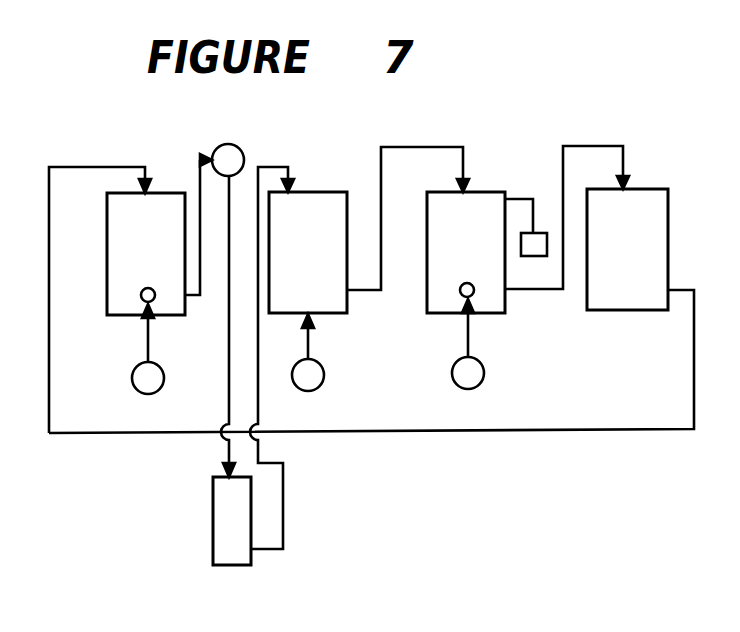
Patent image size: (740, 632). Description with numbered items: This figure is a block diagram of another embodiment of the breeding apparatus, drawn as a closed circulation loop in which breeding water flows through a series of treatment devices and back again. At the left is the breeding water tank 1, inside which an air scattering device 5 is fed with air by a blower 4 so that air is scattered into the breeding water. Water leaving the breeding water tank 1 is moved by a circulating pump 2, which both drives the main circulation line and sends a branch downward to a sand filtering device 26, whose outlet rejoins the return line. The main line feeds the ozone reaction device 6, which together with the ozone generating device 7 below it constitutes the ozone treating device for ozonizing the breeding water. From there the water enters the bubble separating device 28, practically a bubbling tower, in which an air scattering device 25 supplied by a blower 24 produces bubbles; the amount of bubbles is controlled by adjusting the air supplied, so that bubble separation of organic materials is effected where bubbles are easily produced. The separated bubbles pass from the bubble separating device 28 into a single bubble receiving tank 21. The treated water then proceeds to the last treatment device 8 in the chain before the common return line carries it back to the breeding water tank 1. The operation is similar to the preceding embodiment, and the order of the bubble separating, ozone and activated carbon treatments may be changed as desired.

The breeding water tank 1 is at (107, 237).
The circulating pump 2 is at (242, 150).
The blower 4 is at (164, 380).
The air scattering device 5 is at (143, 301).
The ozone reaction device 6 is at (312, 190).
The ozone generating device 7 is at (324, 380).
The fourth vessel 8 is at (612, 310).
The bubble receiving tank 21 is at (533, 256).
The blower 24 is at (484, 378).
The air scattering device 25 is at (460, 300).
The sand filtering device 26 is at (213, 528).
The bubble separating device 28 is at (427, 255).